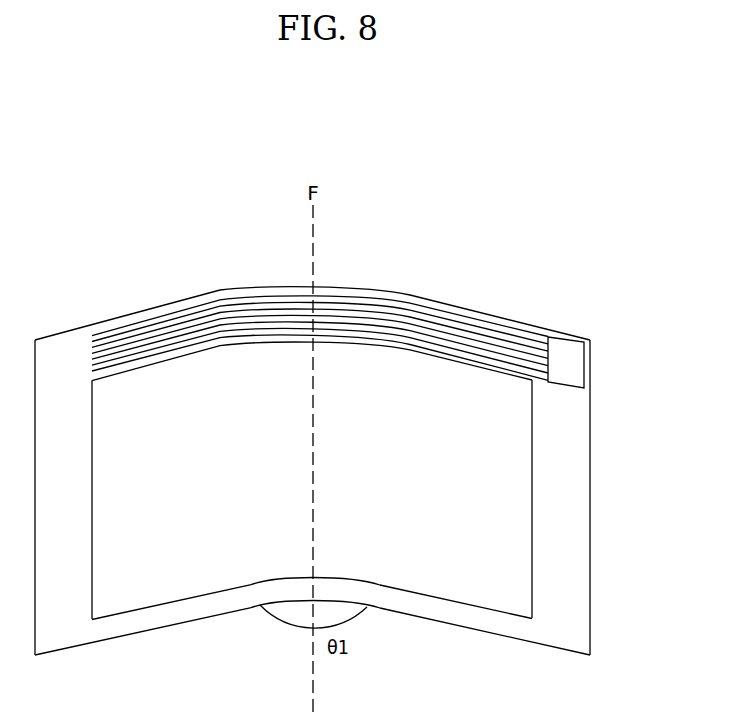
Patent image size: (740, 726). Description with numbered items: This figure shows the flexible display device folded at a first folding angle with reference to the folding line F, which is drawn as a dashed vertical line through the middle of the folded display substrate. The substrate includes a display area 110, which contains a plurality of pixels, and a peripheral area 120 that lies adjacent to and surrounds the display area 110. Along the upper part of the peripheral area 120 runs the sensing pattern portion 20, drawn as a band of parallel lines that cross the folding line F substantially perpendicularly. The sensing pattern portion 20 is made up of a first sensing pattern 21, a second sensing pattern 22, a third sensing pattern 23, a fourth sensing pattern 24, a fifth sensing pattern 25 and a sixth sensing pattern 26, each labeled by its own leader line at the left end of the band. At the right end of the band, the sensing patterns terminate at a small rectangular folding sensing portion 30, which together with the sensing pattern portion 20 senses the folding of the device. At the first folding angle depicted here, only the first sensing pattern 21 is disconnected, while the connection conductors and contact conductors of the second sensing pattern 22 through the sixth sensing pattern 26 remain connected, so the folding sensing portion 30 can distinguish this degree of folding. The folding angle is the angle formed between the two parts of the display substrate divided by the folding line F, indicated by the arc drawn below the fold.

The sensing pattern portion 20 is at (297, 281).
The first sensing pattern 21 is at (282, 297).
The second sensing pattern 22 is at (250, 308).
The third sensing pattern 23 is at (213, 321).
The fourth sensing pattern 24 is at (193, 332).
The fifth sensing pattern 25 is at (160, 347).
The sixth sensing pattern 26 is at (131, 361).
The folding sensing portion 30 is at (567, 360).
The display area 110 is at (460, 614).
The peripheral area 120 is at (573, 513).